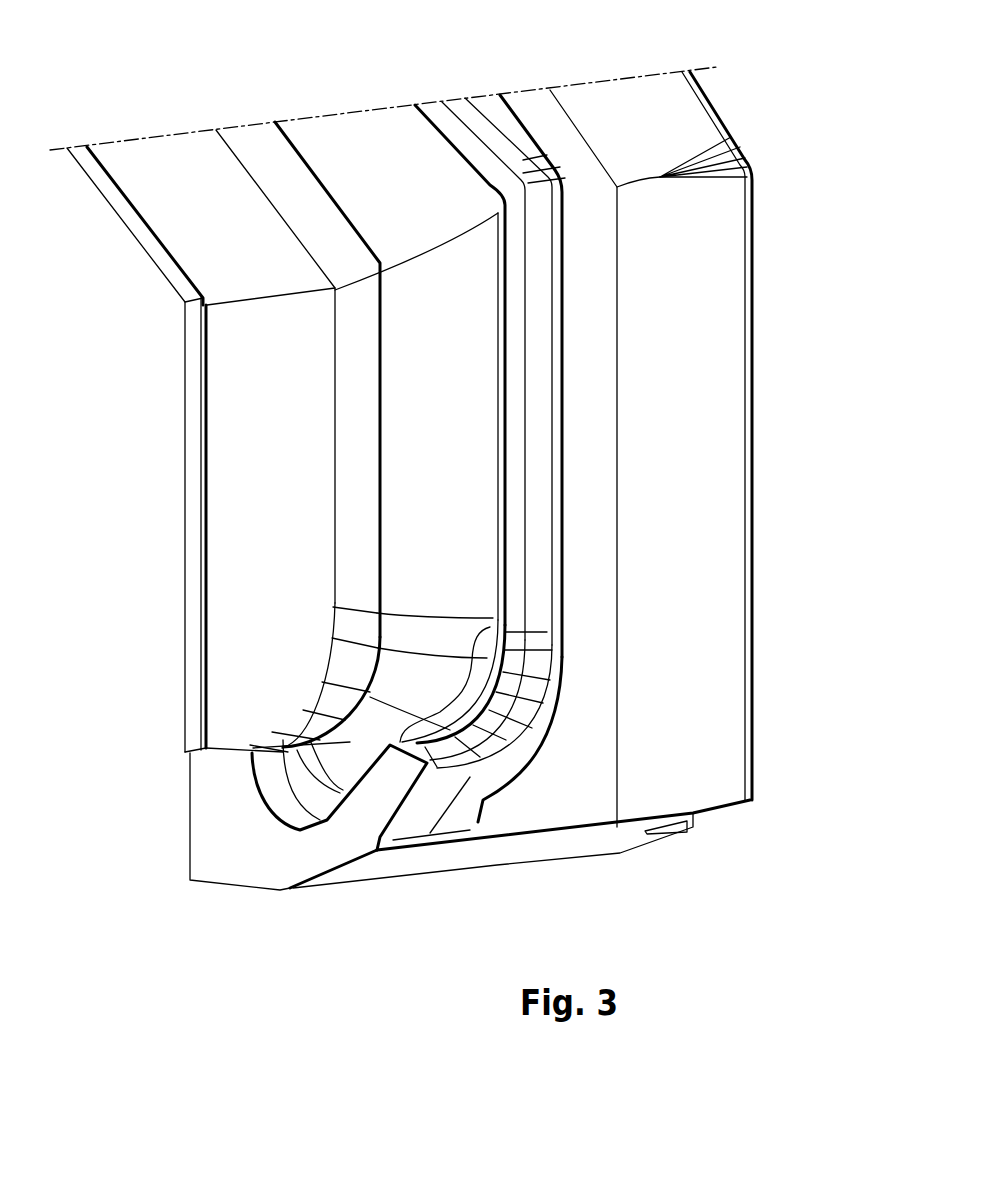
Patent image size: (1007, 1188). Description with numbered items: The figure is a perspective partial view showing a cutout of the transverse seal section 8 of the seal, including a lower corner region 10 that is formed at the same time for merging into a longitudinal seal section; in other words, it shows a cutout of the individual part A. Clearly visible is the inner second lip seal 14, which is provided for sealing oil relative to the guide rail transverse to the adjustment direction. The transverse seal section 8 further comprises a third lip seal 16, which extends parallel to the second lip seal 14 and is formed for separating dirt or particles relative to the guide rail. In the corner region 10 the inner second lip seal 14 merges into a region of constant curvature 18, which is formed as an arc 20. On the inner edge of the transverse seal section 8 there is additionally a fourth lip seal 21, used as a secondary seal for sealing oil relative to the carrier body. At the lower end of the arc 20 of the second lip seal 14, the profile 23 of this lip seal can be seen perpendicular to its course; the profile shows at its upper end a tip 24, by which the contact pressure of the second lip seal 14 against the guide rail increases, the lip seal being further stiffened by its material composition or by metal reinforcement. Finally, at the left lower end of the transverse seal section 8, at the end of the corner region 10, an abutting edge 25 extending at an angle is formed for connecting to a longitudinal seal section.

The transverse seal section 8 is at (337, 108).
The individual part A is at (760, 159).
The lower corner region 10 is at (587, 870).
The second lip seal 14 is at (538, 433).
The third lip seal 16 is at (732, 778).
The region of constant curvature 18 is at (452, 690).
The arc 20 is at (533, 760).
The fourth lip seal 21 is at (190, 414).
The profile 23 is at (385, 793).
The tip 24 is at (437, 750).
The abutting edge 25 is at (230, 882).